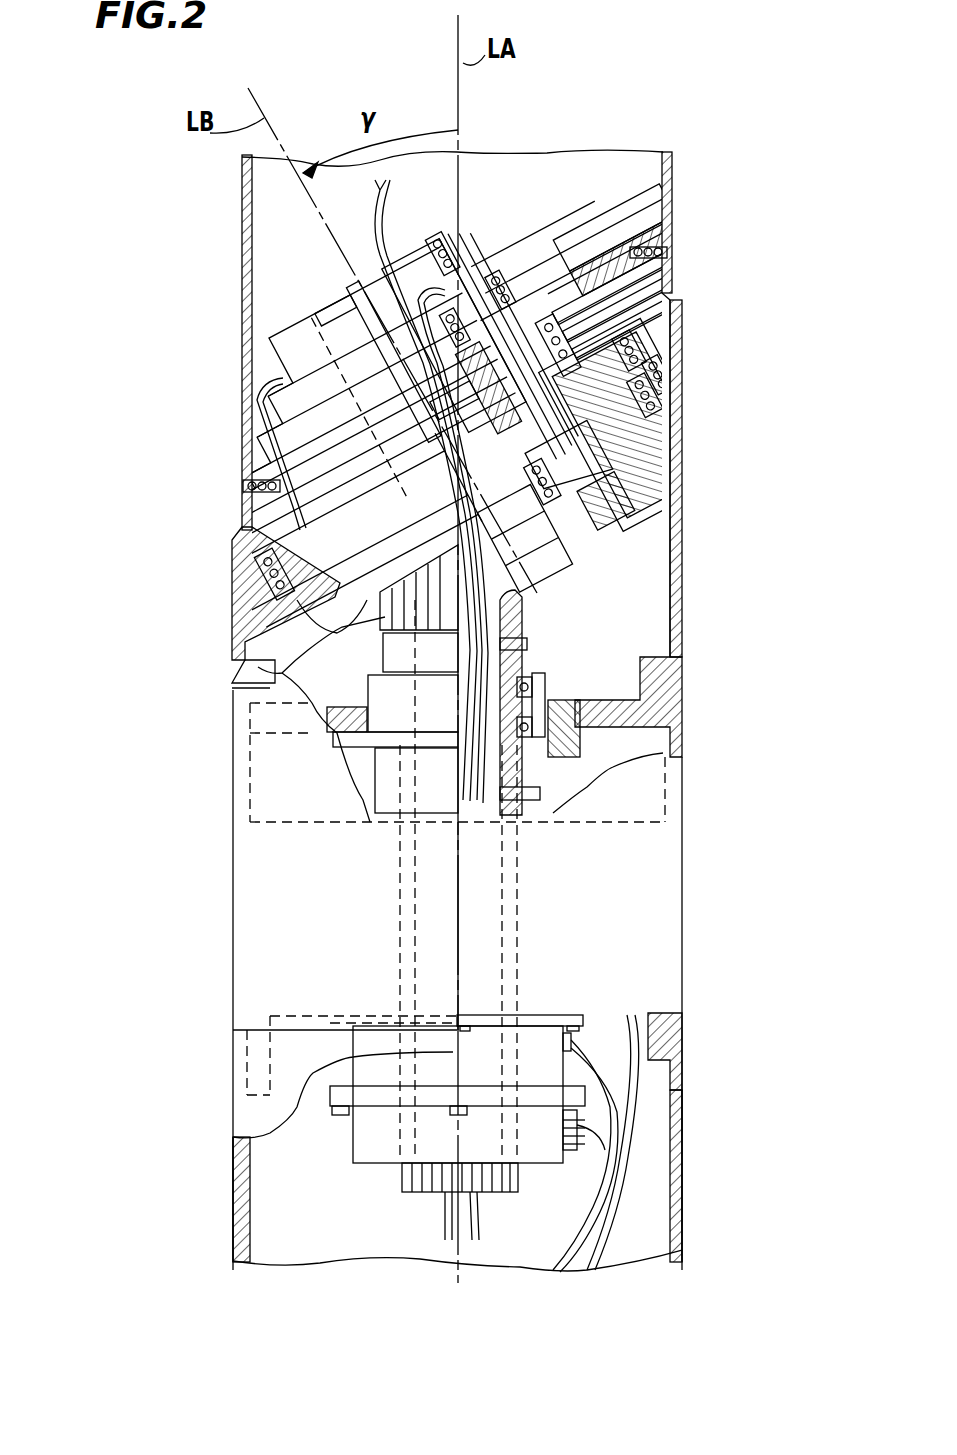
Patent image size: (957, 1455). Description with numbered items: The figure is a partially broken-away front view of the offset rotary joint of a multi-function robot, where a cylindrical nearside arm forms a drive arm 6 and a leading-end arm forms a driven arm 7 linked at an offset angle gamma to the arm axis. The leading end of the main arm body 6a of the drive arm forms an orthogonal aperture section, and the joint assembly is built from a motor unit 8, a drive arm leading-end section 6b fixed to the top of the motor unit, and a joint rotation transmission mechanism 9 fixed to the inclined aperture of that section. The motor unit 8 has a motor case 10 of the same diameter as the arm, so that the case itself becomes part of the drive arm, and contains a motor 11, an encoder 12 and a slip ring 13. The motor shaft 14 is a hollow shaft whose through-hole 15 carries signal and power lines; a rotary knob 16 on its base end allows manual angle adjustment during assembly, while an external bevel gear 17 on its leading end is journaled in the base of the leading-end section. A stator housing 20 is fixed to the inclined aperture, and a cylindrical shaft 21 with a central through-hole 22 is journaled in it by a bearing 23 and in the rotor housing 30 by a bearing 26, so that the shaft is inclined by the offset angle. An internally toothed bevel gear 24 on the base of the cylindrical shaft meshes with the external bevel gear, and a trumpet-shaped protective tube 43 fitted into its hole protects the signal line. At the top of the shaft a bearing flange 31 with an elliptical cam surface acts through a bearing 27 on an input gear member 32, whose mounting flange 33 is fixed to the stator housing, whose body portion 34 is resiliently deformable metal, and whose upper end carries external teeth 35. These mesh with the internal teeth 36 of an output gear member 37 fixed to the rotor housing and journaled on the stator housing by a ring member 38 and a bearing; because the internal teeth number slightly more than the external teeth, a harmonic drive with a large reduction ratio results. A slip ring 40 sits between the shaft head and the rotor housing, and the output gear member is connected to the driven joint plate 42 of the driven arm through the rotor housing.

The drive arm 6 is at (233, 1207).
The main arm body 6a is at (682, 1200).
The drive arm leading-end section 6b is at (682, 597).
The driven arm 7 is at (240, 283).
The motor unit 8 is at (234, 973).
The joint rotation transmission mechanism 9 is at (292, 463).
The motor case 10 is at (663, 925).
The motor 11 is at (663, 925).
The encoder 12 is at (543, 1060).
The slip ring 13 is at (577, 1135).
The motor shaft 14 is at (515, 890).
The through-hole 15 is at (445, 895).
The rotary knob 16 is at (405, 1177).
The external bevel gear 17 is at (292, 667).
The stator housing 20 is at (262, 583).
The cylindrical shaft 21 is at (647, 460).
The through-hole 22 is at (693, 523).
The bearing 23 is at (545, 470).
The internally toothed bevel gear 24 is at (567, 493).
The bearing 26 is at (497, 300).
The bearing 27 is at (527, 305).
The rotor housing 30 is at (320, 443).
The bearing flange 31 is at (670, 300).
The input gear member 32 is at (672, 370).
The mounting flange 33 is at (640, 423).
The body portion 34 is at (530, 400).
The external teeth 35 is at (670, 280).
The internal teeth 36 is at (670, 287).
The output gear member 37 is at (580, 267).
The ring member 38 is at (460, 290).
The slip ring 40 is at (445, 265).
The driven joint plate 42 is at (650, 227).
The trumpet-shaped protective tube 43 is at (537, 507).